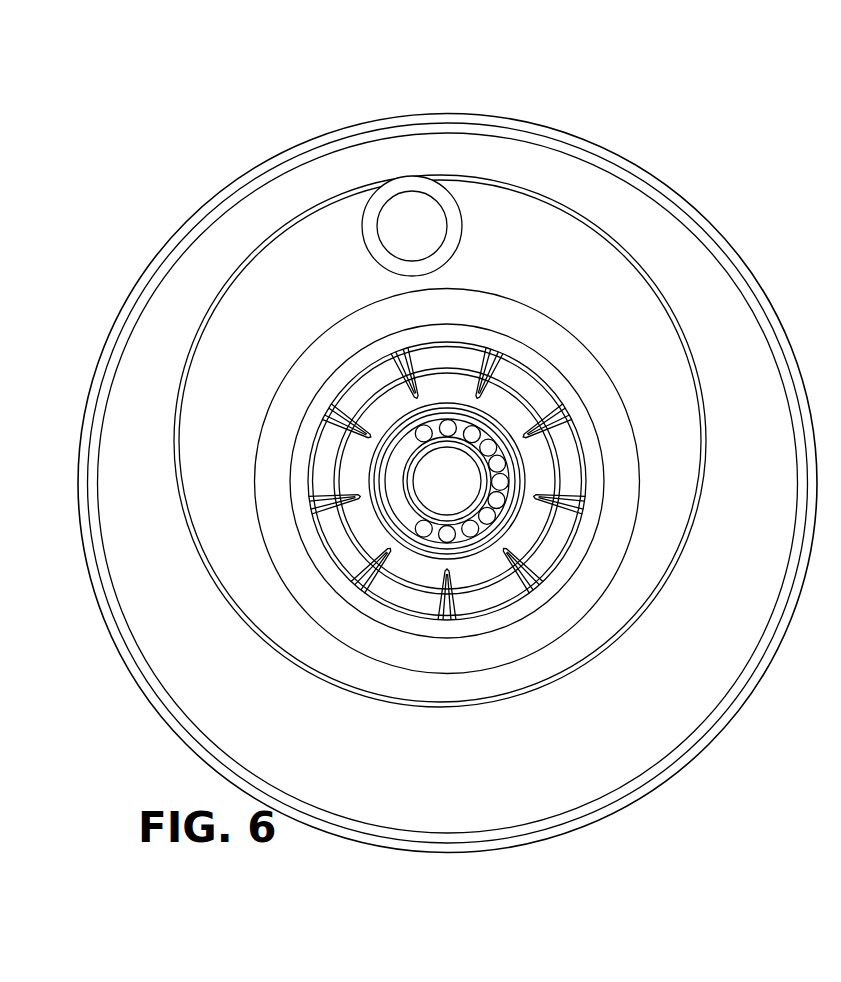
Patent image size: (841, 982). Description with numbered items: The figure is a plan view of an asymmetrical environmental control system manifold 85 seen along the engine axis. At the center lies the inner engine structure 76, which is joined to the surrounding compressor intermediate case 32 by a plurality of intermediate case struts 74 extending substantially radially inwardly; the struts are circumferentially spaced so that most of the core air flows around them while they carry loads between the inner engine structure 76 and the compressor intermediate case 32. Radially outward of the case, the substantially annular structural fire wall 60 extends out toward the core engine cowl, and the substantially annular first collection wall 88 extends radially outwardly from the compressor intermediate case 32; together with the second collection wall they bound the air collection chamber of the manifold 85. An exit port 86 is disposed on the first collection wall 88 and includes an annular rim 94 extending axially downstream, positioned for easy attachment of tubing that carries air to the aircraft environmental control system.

The structural fire wall 60 is at (608, 197).
The environmental control system manifold 85 is at (593, 288).
The first collection wall 88 is at (622, 322).
The annular rim 94 is at (409, 185).
The exit port 86 is at (425, 217).
The compressor intermediate case 32 is at (597, 570).
The intermediate case struts 74 is at (505, 550).
The inner engine structure 76 is at (483, 560).